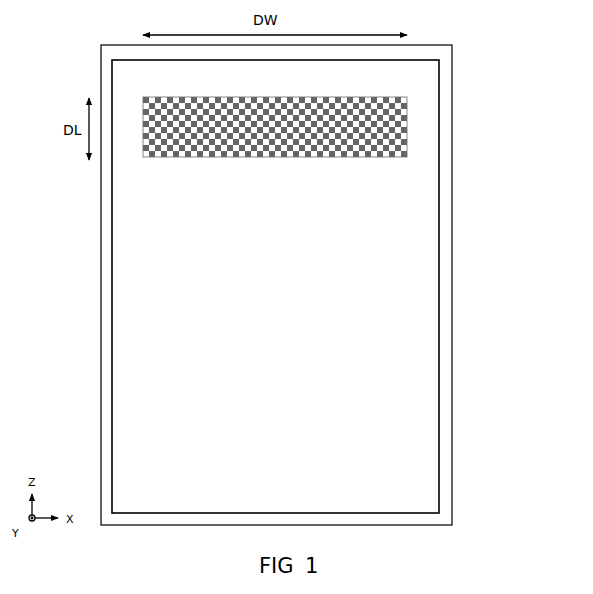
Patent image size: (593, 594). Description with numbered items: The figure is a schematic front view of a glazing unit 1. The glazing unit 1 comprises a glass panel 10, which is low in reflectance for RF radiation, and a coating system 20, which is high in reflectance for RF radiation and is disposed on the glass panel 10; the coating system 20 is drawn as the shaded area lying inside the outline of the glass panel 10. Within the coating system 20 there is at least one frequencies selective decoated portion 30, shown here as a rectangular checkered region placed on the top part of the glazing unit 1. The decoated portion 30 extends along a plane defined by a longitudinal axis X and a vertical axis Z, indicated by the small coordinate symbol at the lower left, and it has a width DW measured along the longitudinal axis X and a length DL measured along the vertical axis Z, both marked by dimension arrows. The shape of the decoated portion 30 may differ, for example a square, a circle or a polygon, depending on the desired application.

The glazing unit 1 is at (514, 45).
The glass panel 10 is at (452, 308).
The coating system 20 is at (439, 254).
The frequencies selective decoated portion 30 is at (408, 143).